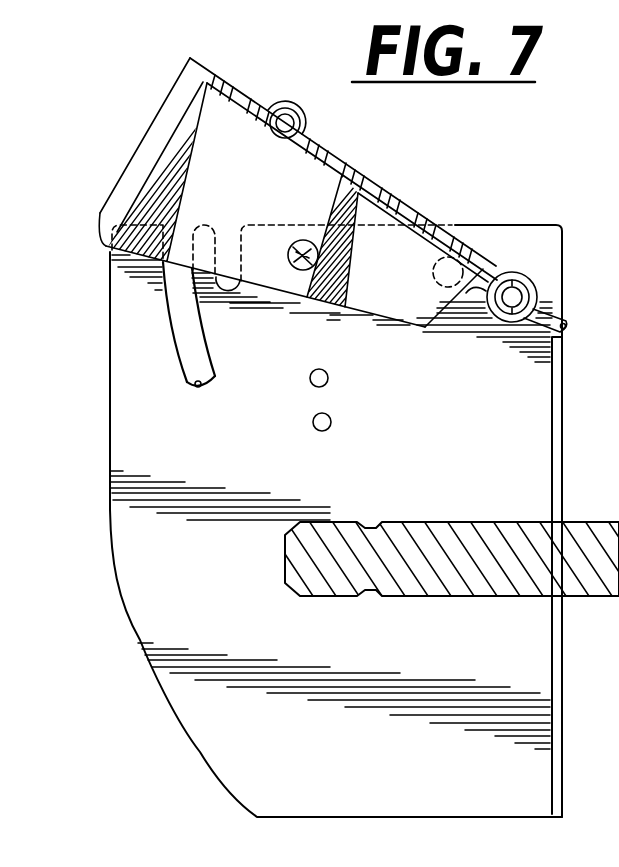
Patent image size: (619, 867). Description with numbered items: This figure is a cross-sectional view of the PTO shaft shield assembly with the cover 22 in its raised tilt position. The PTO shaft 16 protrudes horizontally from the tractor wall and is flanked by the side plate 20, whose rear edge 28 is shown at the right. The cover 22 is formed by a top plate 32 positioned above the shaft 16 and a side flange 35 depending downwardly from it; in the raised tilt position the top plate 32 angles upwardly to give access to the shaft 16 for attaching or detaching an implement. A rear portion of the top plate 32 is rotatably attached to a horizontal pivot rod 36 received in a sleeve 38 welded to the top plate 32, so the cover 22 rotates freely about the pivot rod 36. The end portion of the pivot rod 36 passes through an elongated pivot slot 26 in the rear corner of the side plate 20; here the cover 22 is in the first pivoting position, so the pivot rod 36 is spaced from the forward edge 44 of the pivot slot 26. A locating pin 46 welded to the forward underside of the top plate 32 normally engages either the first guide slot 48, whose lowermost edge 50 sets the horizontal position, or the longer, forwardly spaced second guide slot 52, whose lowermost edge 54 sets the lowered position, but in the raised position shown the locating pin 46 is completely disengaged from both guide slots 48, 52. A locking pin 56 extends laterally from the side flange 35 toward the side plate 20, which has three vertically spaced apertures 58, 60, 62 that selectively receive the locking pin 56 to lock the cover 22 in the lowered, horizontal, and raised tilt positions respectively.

The PTO shaft 16 is at (458, 532).
The side plate 20 is at (153, 692).
The cover 22 is at (384, 182).
The pivot slot 26 is at (478, 284).
The rear edge 28 is at (566, 232).
The top plate 32 is at (418, 209).
The side flange 35 is at (96, 223).
The pivot rod 36 is at (516, 298).
The sleeve 38 is at (510, 322).
The forward edge 44 is at (433, 265).
The locating pin 46 is at (286, 109).
The first guide slot 48 is at (282, 281).
The lowermost edge 50 is at (216, 281).
The second guide slot 52 is at (170, 331).
The lowermost edge 54 is at (195, 386).
The locking pin 56 is at (304, 240).
The aperture 58 is at (332, 420).
The aperture 60 is at (329, 378).
The aperture 62 is at (289, 257).